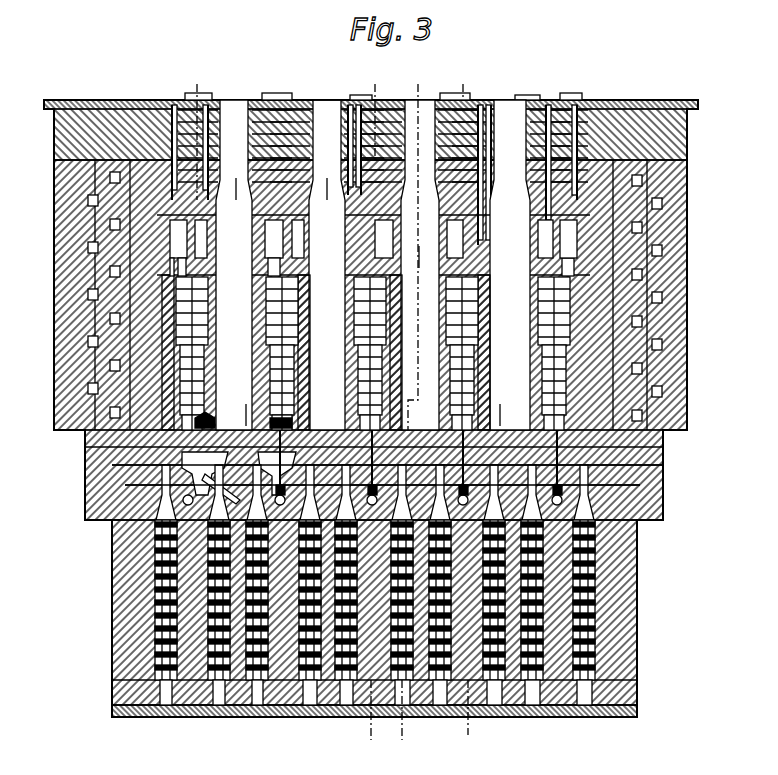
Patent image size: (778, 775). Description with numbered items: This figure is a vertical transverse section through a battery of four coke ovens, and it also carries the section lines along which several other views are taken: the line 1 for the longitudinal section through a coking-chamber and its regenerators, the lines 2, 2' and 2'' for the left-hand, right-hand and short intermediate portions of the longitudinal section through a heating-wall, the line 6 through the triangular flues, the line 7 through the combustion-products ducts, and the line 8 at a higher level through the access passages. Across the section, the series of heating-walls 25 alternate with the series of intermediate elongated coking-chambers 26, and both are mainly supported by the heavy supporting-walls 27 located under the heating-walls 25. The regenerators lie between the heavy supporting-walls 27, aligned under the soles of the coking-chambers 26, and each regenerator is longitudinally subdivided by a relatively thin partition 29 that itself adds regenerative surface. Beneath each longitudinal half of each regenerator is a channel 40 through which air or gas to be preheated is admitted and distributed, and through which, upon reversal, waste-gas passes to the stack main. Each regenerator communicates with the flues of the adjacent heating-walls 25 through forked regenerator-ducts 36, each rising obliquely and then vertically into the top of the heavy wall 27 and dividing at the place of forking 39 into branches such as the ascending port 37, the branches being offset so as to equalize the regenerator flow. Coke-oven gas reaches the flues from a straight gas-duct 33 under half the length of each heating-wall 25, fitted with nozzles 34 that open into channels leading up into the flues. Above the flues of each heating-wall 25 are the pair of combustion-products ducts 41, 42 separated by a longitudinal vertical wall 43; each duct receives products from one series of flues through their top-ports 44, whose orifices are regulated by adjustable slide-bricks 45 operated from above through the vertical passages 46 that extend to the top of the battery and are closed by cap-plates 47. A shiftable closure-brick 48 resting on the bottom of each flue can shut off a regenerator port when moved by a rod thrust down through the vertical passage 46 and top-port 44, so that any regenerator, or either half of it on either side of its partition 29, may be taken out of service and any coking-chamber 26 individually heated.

The section line 1— 1 is at (430, 84).
The section line 2— 2 is at (376, 417).
The section line 2'— 2' is at (467, 410).
The section line 2''— 2'' is at (196, 132).
The section line 6— 6 is at (243, 422).
The section line 7— 7 is at (416, 264).
The section line 8— 8 is at (233, 196).
The heating-wall 25 is at (218, 352).
The coking-chamber 26 is at (373, 265).
The heavy supporting-wall 27 is at (150, 570).
The partition 29 is at (245, 690).
The gas-duct 33 is at (160, 515).
The nozzle 34 is at (590, 487).
The forked regenerator-duct 36 is at (180, 540).
The ascending port 37 is at (182, 460).
The place of forking 39 is at (150, 485).
The channel 40 is at (166, 705).
The combustion-products duct 41 is at (208, 233).
The combustion-products duct 42 is at (304, 236).
The longitudinal vertical wall 43 is at (284, 226).
The top-port 44 is at (300, 272).
The adjustable slide-brick 45 is at (208, 258).
The vertical passage 46 is at (348, 108).
The cap-plate 47 is at (290, 100).
The shiftable closure-brick 48 is at (210, 416).